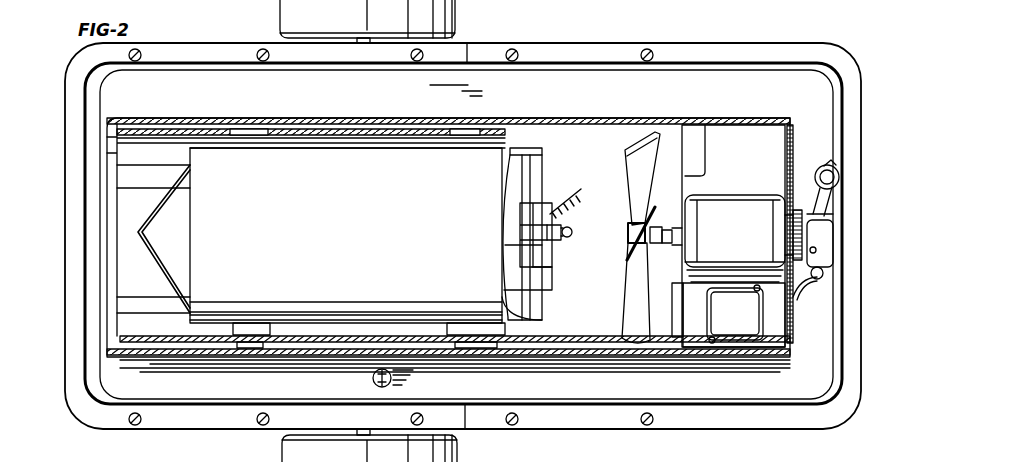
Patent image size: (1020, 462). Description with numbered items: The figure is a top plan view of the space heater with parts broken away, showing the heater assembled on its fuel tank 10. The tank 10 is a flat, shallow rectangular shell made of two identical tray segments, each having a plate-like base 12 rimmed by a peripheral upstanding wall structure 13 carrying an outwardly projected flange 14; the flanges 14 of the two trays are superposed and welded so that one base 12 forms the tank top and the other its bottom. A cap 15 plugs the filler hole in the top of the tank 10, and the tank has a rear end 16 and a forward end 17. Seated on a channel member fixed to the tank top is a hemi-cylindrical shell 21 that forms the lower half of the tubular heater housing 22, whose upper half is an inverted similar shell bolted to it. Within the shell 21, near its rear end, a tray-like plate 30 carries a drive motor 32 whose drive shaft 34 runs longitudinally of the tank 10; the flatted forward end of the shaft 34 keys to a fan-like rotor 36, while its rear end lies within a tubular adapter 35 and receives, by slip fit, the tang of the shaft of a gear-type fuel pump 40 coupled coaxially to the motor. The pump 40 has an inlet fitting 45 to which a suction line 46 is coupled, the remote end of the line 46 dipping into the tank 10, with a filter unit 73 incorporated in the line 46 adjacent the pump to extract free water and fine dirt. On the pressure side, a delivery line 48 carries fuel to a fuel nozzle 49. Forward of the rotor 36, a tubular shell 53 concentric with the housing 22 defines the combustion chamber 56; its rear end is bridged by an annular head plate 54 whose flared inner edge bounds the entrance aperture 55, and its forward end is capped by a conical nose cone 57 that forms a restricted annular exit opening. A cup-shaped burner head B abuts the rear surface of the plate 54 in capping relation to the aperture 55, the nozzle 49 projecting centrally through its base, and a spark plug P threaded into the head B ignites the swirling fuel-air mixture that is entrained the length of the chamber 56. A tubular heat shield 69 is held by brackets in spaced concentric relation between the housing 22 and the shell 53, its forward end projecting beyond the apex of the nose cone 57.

The fuel tank 10 is at (88, 172).
The base 12 is at (602, 397).
The peripheral upstanding wall structure 13 is at (716, 63).
The flange 14 is at (86, 95).
The cap 15 is at (373, 378).
The rear end 16 is at (836, 133).
The forward end 17 is at (102, 371).
The hemi-cylindrically shaped shell 21 is at (553, 119).
The heater housing 22 is at (378, 121).
The tray-like plate 30 is at (744, 130).
The drive motor 32 is at (722, 202).
The drive shaft 34 is at (672, 222).
The tubular adapter 35 is at (796, 232).
The rotor 36 is at (641, 346).
The fuel pump 40 is at (836, 243).
The inlet fitting 45 is at (822, 211).
The suction line 46 is at (803, 198).
The delivery line 48 is at (572, 226).
The fuel nozzle 49 is at (531, 237).
The tubular shell 53 is at (344, 189).
The annular head plate 54 is at (540, 170).
The entrance aperture 55 is at (504, 216).
The combustion chamber 56 is at (520, 300).
The nose cone 57 is at (140, 236).
The tubular heat shield 69 is at (296, 130).
The filter unit 73 is at (840, 177).
The spark plug P is at (584, 192).
The burner head B is at (558, 247).